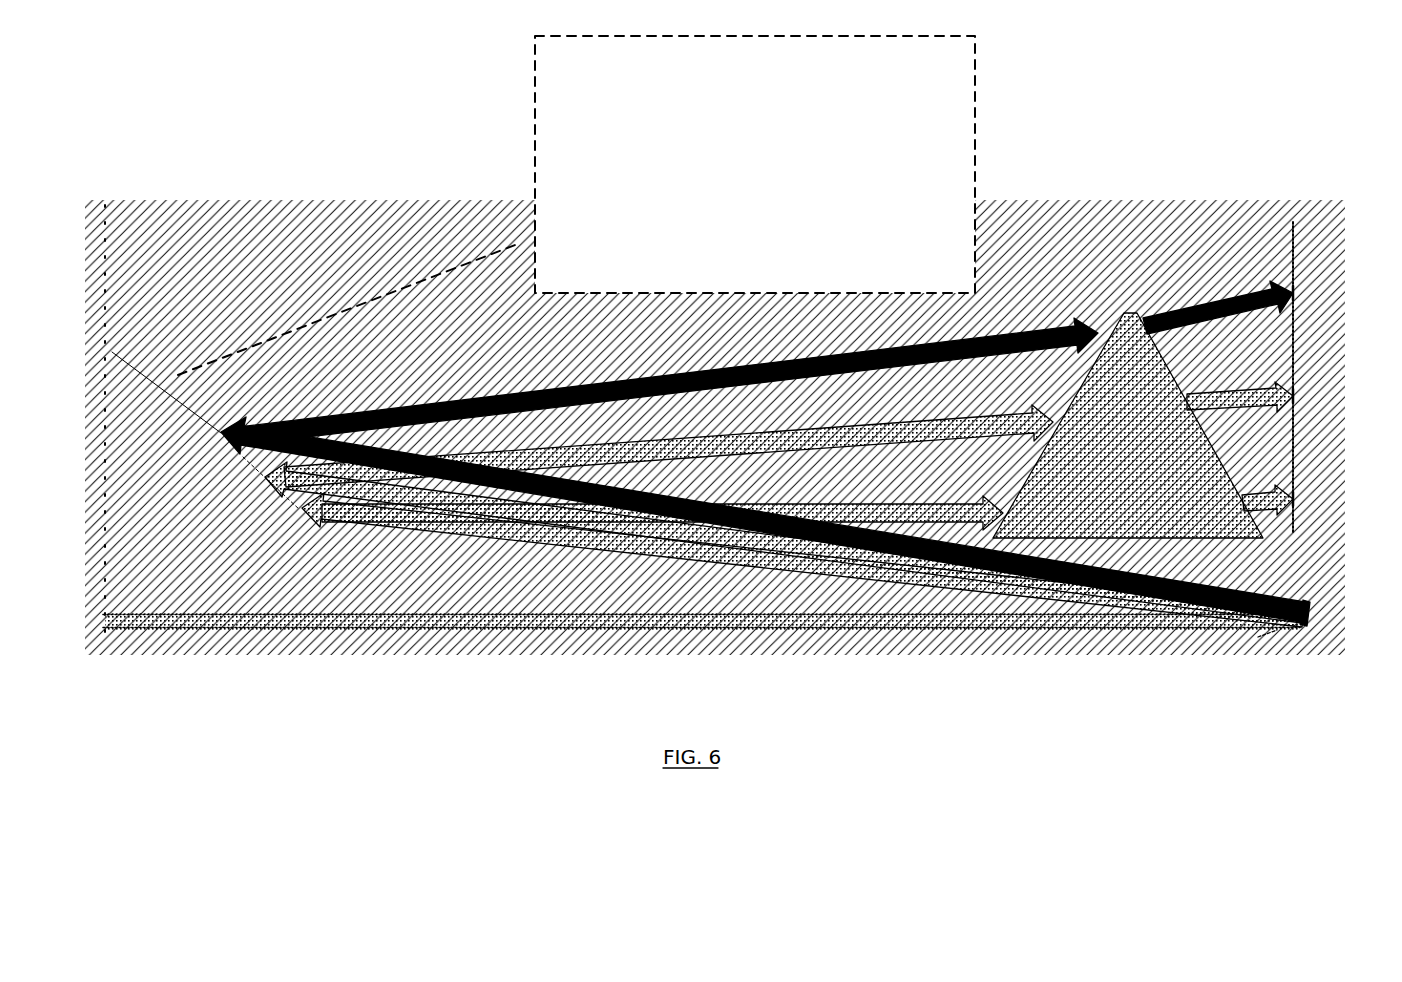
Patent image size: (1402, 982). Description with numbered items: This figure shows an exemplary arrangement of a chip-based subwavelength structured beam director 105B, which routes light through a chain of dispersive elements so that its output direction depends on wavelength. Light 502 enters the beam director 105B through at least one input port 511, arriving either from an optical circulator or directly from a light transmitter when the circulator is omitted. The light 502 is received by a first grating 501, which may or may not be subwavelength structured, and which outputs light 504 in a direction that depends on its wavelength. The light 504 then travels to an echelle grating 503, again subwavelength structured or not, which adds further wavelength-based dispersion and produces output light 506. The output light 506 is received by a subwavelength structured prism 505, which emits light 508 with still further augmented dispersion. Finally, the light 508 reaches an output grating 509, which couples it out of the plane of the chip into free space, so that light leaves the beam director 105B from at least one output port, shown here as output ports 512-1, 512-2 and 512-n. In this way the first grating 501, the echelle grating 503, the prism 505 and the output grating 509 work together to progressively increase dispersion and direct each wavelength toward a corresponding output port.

The chip-based subwavelength structured beam director 105B is at (1261, 103).
The echelle grating 503 is at (125, 355).
The input port 511 is at (105, 622).
The light 502 is at (278, 620).
The light 504 is at (618, 550).
The output light 506 is at (955, 515).
The subwavelength structured prism 505 is at (1130, 310).
The light 508 is at (1260, 500).
The output grating 509 is at (1297, 230).
The output port 512-n is at (1295, 291).
The output port 512-2 is at (1295, 393).
The output port 512-1 is at (1295, 497).
The first grating 501 is at (1280, 630).